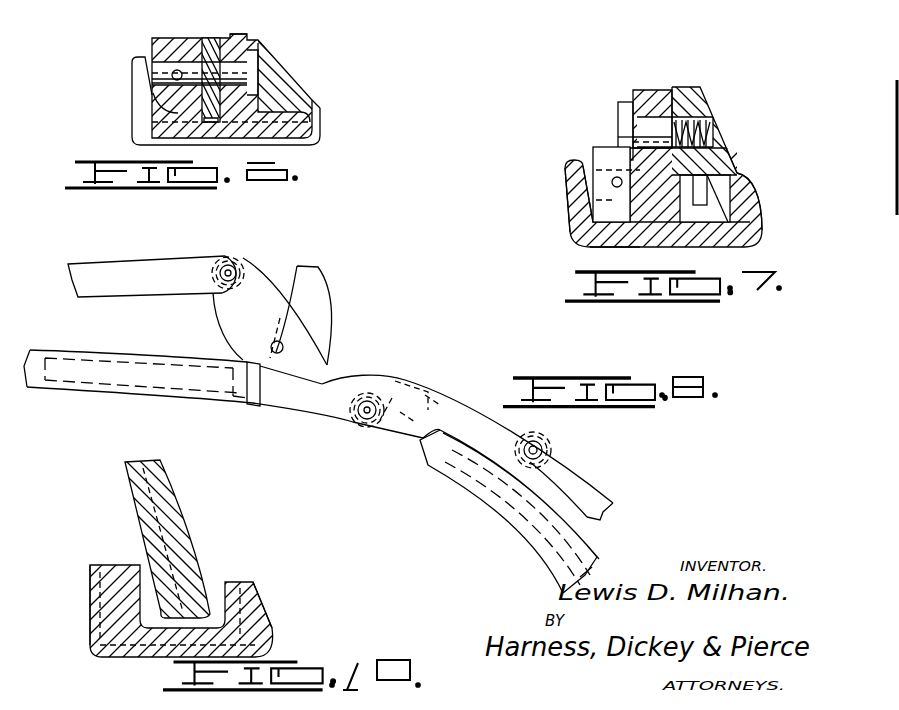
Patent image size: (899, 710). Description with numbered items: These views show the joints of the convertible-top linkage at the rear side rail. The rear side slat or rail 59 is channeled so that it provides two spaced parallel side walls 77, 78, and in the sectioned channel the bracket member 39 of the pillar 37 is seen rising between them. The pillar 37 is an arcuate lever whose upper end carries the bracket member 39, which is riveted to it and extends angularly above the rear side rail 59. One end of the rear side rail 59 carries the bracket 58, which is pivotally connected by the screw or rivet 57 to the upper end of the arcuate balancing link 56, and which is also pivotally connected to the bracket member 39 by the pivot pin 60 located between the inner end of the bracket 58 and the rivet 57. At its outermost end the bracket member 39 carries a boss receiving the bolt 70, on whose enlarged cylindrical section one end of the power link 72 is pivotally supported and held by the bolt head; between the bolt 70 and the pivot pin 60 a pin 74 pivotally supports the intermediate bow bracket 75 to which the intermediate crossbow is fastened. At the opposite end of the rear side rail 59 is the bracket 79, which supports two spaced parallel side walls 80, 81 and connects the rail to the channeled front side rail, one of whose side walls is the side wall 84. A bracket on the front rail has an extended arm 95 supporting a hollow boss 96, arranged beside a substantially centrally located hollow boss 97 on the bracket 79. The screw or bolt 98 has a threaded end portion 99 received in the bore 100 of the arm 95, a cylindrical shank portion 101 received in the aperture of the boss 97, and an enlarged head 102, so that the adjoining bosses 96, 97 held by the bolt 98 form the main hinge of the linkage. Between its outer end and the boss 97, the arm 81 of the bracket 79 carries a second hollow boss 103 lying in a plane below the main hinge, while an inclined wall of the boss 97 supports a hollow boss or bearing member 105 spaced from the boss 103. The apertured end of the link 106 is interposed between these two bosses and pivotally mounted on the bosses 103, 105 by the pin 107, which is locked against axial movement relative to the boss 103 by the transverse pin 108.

In FIG. 8, the pillar 37 is at (506, 539).
In FIG. 8, the bracket member 39 is at (215, 315).
In FIG. 10, the bracket member 39 is at (163, 500).
In FIG. 8, the balancing link 56 is at (592, 488).
In FIG. 8, the screw or rivet 57 is at (548, 446).
In FIG. 8, the bracket 58 is at (323, 378).
In FIG. 7, the rear side slat or rail 59 is at (668, 240).
In FIG. 8, the rear side slat or rail 59 is at (158, 391).
In FIG. 10, the rear side slat or rail 59 is at (127, 660).
In FIG. 8, the pivot pin 60 is at (367, 416).
In FIG. 8, the bolt 70 is at (240, 266).
In FIG. 8, the power link 72 is at (133, 268).
In FIG. 8, the pin 74 is at (284, 346).
In FIG. 8, the intermediate bow bracket 75 is at (323, 297).
In FIG. 10, the side wall 77 is at (90, 592).
In FIG. 10, the side wall 78 is at (263, 608).
In FIG. 6, the bracket 79 is at (222, 133).
In FIG. 7, the side wall 80 is at (762, 218).
In FIG. 7, the side wall 81 is at (568, 195).
In FIG. 6, the side wall 84 is at (132, 90).
In FIG. 6, the extended arm 95 is at (280, 62).
In FIG. 7, the extended arm 95 is at (755, 195).
In FIG. 7, the hollow boss 96 is at (700, 89).
In FIG. 7, the hollow boss 97 is at (646, 117).
In FIG. 7, the screw or bolt 98 is at (617, 107).
In FIG. 7, the threaded end portion 99 is at (703, 125).
In FIG. 7, the bore 100 is at (728, 152).
In FIG. 7, the cylindrical shank portion 101 is at (656, 100).
In FIG. 7, the enlarged head 102 is at (622, 121).
In FIG. 6, the hollow boss 103 is at (170, 95).
In FIG. 6, the hollow boss or bearing member 105 is at (244, 35).
In FIG. 6, the link 106 is at (212, 38).
In FIG. 7, the link 106 is at (625, 248).
In FIG. 6, the pin 107 is at (242, 70).
In FIG. 7, the pin 107 is at (578, 222).
In FIG. 6, the transverse pin 108 is at (177, 70).